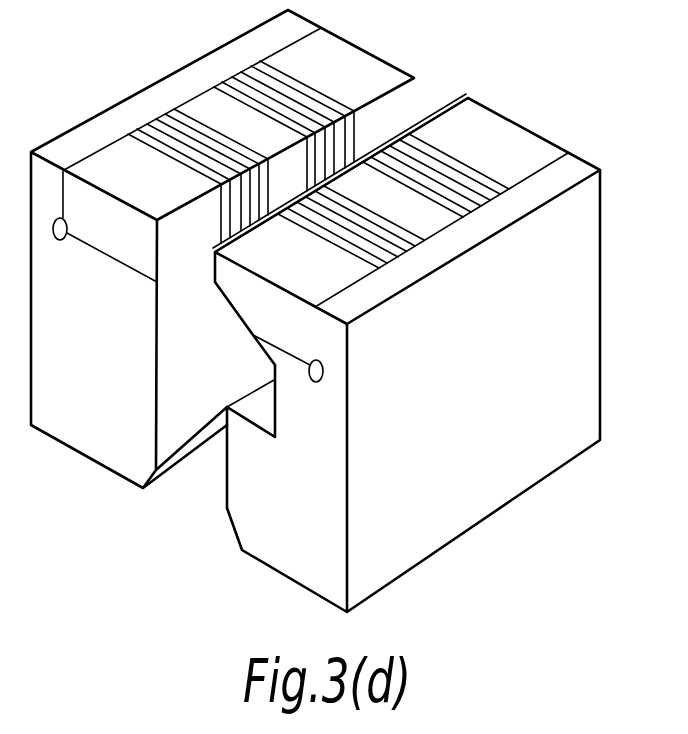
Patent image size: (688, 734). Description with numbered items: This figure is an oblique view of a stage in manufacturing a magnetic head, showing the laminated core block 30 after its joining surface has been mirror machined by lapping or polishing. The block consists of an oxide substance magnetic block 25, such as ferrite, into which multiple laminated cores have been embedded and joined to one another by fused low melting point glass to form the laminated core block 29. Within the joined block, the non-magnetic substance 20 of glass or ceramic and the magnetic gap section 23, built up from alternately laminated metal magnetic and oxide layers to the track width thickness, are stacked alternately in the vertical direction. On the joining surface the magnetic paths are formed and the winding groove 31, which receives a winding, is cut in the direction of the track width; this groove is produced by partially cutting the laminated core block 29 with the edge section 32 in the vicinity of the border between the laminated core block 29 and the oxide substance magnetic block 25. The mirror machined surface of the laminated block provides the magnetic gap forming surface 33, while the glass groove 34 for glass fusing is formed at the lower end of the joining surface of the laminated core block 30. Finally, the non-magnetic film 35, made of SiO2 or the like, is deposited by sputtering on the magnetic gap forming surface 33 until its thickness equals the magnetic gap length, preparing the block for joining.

The non-magnetic substance 20 is at (345, 277).
The magnetic gap section 23 is at (400, 258).
The oxide substance magnetic block 25 is at (578, 400).
The laminated core block 29 is at (185, 101).
The laminated core block 30 is at (388, 594).
The winding groove 31 is at (273, 412).
The edge section 32 is at (232, 310).
The magnetic gap forming surface 33 is at (171, 263).
The glass groove 34 is at (233, 527).
The non-magnetic film 35 is at (447, 110).